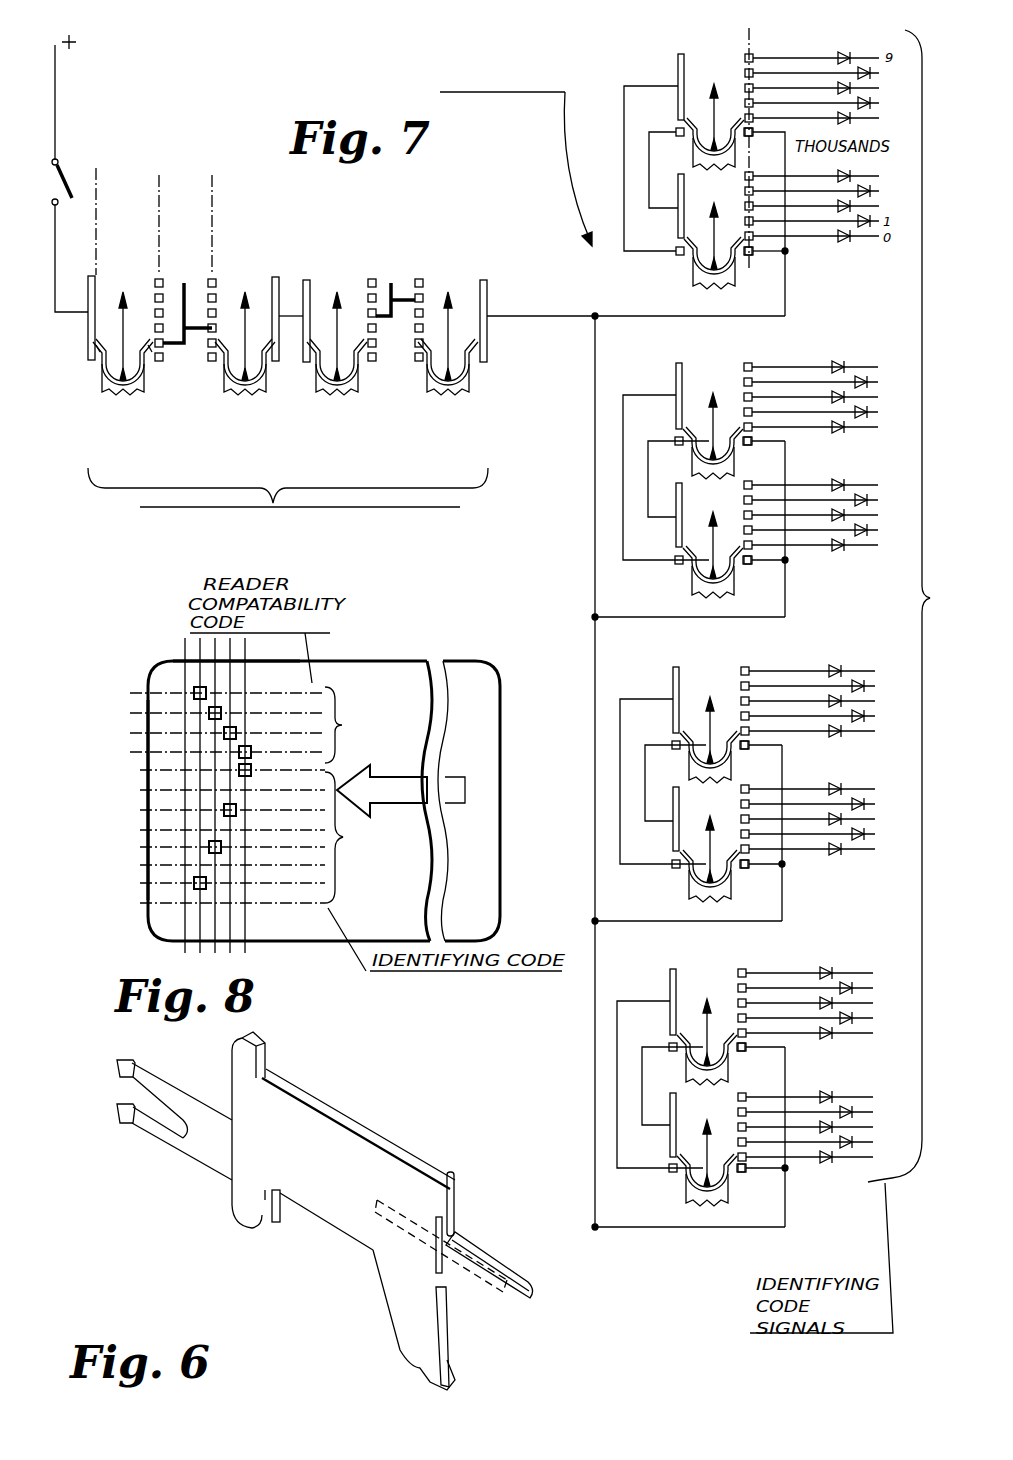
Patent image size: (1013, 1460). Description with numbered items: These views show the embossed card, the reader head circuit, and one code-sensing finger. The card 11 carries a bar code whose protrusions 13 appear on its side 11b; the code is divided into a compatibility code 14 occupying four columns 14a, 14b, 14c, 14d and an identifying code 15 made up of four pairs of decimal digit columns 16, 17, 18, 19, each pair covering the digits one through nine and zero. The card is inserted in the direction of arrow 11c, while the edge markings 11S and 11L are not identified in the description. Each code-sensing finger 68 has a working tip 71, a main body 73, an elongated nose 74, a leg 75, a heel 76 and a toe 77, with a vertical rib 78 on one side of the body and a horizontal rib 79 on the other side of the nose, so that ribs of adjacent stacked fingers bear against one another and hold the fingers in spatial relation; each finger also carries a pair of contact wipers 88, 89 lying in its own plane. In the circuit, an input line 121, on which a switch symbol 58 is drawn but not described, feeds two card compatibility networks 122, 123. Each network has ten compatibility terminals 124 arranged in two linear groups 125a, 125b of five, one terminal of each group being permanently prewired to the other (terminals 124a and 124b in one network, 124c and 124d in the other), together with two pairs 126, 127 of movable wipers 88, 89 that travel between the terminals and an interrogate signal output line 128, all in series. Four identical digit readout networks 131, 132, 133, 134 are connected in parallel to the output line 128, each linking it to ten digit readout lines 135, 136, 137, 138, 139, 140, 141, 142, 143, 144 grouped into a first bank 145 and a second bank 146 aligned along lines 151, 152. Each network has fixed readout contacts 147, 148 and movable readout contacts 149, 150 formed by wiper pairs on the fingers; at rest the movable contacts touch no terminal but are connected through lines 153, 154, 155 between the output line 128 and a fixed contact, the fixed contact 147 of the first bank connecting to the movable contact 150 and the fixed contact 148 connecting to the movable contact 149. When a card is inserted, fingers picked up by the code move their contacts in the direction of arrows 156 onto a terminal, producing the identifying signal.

In FIG. 7, the input line 121 is at (58, 78).
In FIG. 7, the switch 58 is at (76, 175).
In FIG. 7, the linear group of compatibility terminals 125a is at (160, 182).
In FIG. 7, the linear group of compatibility terminals 125b is at (214, 192).
In FIG. 7, the compatibility terminals 124 is at (212, 275).
In FIG. 7, the connected terminal 124a is at (170, 355).
In FIG. 7, the connected terminal 124b is at (216, 326).
In FIG. 7, the connected terminal 124c is at (370, 314).
In FIG. 7, the connected terminal 124d is at (422, 300).
In FIG. 7, the contact wiper 88 is at (102, 355).
In FIG. 6, the contact wiper 88 is at (140, 1083).
In FIG. 7, the contact wiper 89 is at (150, 358).
In FIG. 6, the contact wiper 89 is at (143, 1128).
In FIG. 7, the pair of selectively movable switches 126 is at (108, 403).
In FIG. 7, the pair of selectively movable switches 127 is at (222, 403).
In FIG. 7, the interrogate signal output line 128 is at (514, 320).
In FIG. 7, the card compatibility network 122 is at (142, 438).
In FIG. 7, the card compatibility network 123 is at (406, 406).
In FIG. 7, the digit readout network 131 is at (578, 268).
In FIG. 7, the digit readout network 132 is at (613, 531).
In FIG. 7, the digit readout network 133 is at (612, 723).
In FIG. 7, the digit readout network 134 is at (612, 1097).
In FIG. 7, the digit readout terminal 135 is at (791, 58).
In FIG. 7, the digit readout terminal 136 is at (870, 74).
In FIG. 7, the digit readout terminal 137 is at (869, 90).
In FIG. 7, the digit readout terminal 138 is at (872, 106).
In FIG. 7, the digit readout terminal 139 is at (790, 126).
In FIG. 7, the digit readout terminal 140 is at (791, 177).
In FIG. 7, the digit readout terminal 141 is at (865, 180).
In FIG. 7, the digit readout terminal 142 is at (872, 200).
In FIG. 7, the digit readout terminal 143 is at (862, 242).
In FIG. 7, the digit readout terminal 144 is at (788, 254).
In FIG. 7, the first bank of digit readout terminals 145 is at (736, 66).
In FIG. 7, the second bank of digit readout terminals 146 is at (743, 200).
In FIG. 7, the first fixed readout contact 147 is at (676, 73).
In FIG. 7, the second fixed readout contact 148 is at (676, 222).
In FIG. 7, the first movable readout contact 149 is at (700, 168).
In FIG. 7, the second movable readout contact 150 is at (700, 284).
In FIG. 7, the line of readout terminals 151 is at (753, 30).
In FIG. 7, the line of readout terminals 152 is at (754, 268).
In FIG. 7, the line 153 is at (745, 317).
In FIG. 7, the line 154 is at (624, 183).
In FIG. 7, the line 155 is at (649, 153).
In FIG. 7, the direction arrows 156 is at (752, 140).
In FIG. 8, the card 11 is at (324, 771).
In FIG. 8, the other side of the card 11b is at (455, 668).
In FIG. 8, the direction arrow 11c is at (388, 780).
In FIG. 8, the card side edge 11S is at (337, 663).
In FIG. 8, the card leading edge 11L is at (150, 912).
In FIG. 8, the protrusions 13 is at (197, 890).
In FIG. 8, the compatibility code 14 is at (241, 719).
In FIG. 8, the compatibility code column 14a is at (148, 693).
In FIG. 8, the compatibility code column 14b is at (148, 713).
In FIG. 8, the compatibility code column 14c is at (148, 733).
In FIG. 8, the compatibility code column 14d is at (148, 752).
In FIG. 8, the identifying code 15 is at (231, 840).
In FIG. 8, the identifying code column pair 16 is at (140, 790).
In FIG. 8, the identifying code column pair 17 is at (140, 830).
In FIG. 8, the identifying code column pair 18 is at (140, 865).
In FIG. 8, the identifying code column pair 19 is at (201, 896).
In FIG. 6, the code sensing finger 68 is at (351, 1216).
In FIG. 6, the working tip 71 is at (458, 1176).
In FIG. 6, the main body portion 73 is at (335, 1148).
In FIG. 6, the elongated nose portion 74 is at (538, 1288).
In FIG. 6, the leg portion 75 is at (416, 1370).
In FIG. 6, the heel portion 76 is at (250, 1064).
In FIG. 6, the toe portion 77 is at (248, 1232).
In FIG. 6, the vertical rib 78 is at (434, 1262).
In FIG. 6, the horizontal rib 79 is at (372, 1248).